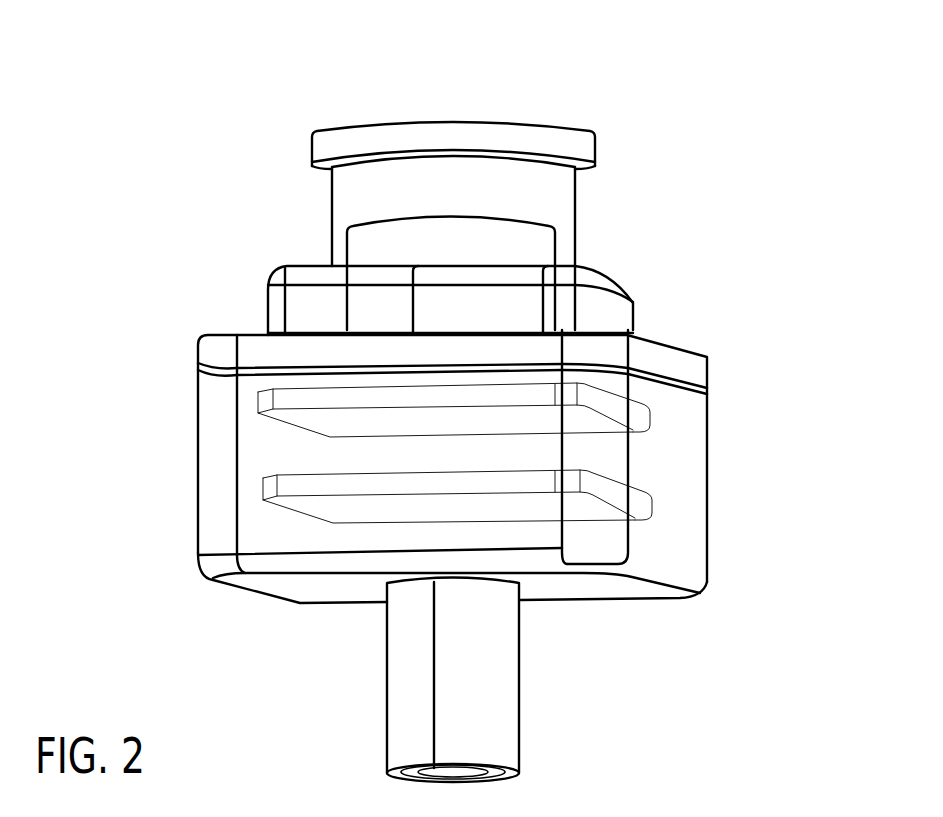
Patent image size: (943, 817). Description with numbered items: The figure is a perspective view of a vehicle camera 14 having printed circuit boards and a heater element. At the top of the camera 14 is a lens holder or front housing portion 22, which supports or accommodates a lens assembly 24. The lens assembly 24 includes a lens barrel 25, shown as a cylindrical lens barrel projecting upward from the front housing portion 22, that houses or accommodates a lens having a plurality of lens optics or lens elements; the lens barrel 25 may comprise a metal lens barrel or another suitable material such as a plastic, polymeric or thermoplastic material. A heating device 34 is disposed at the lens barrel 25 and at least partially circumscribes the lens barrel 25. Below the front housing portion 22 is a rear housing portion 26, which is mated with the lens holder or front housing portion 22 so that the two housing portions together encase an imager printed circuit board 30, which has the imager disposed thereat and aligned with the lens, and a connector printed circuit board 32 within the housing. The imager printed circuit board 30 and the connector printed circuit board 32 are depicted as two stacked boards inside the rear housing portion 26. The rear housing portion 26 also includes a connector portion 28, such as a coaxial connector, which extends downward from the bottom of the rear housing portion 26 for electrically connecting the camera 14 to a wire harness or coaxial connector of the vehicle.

The camera 14 is at (740, 68).
The front housing portion 22 is at (633, 320).
The lens assembly 24 is at (498, 103).
The lens barrel 25 is at (343, 210).
The rear housing portion 26 is at (208, 492).
The connector portion 28 is at (398, 703).
The imager printed circuit board 30 is at (645, 412).
The connector printed circuit board 32 is at (655, 498).
The heating device 34 is at (538, 240).